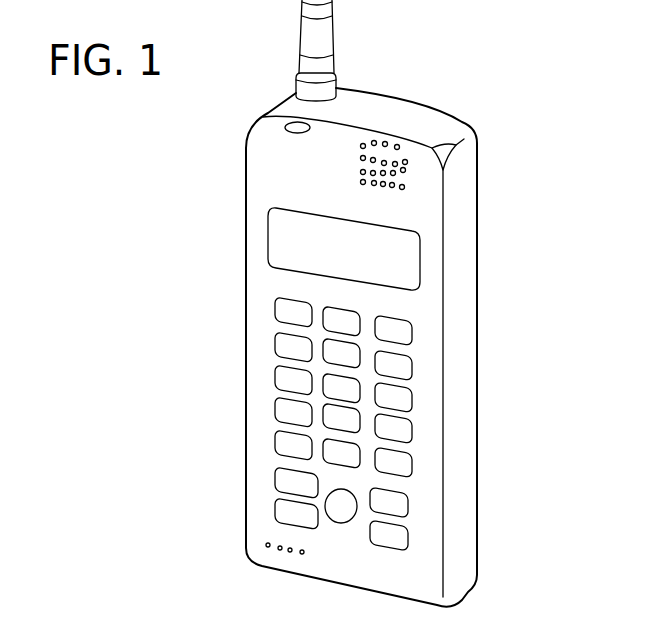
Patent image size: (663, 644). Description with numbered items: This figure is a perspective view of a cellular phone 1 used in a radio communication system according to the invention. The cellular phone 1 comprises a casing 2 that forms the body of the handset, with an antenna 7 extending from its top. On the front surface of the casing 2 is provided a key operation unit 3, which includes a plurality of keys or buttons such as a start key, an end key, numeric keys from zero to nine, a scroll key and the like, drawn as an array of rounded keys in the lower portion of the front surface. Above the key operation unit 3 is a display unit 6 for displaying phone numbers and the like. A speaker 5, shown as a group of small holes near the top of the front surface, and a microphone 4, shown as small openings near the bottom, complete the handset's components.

The cellular phone 1 is at (500, 95).
The casing 2 is at (428, 128).
The key operation unit 3 is at (415, 412).
The microphone 4 is at (280, 547).
The speaker 5 is at (403, 170).
The display unit 6 is at (403, 255).
The antenna 7 is at (340, 60).